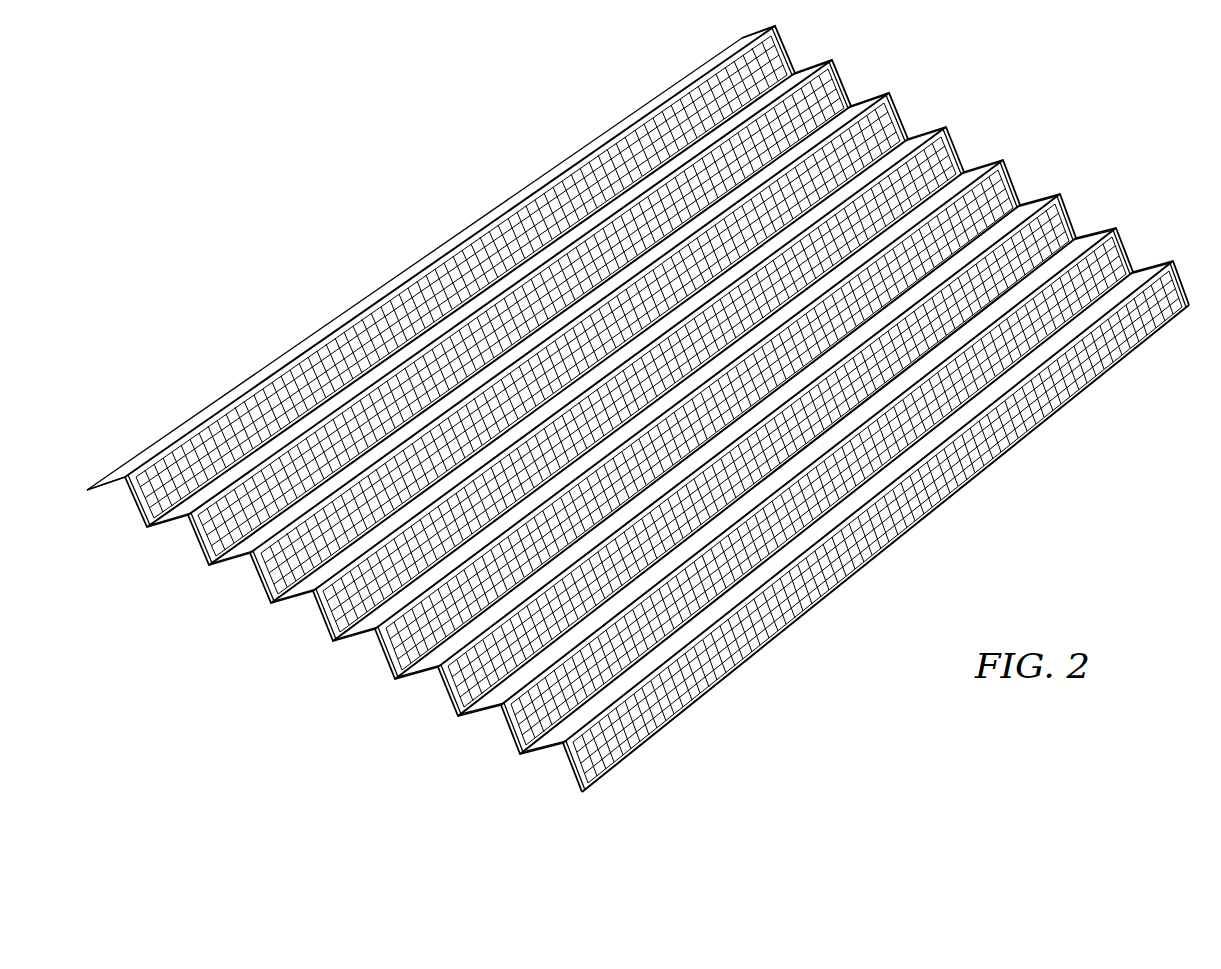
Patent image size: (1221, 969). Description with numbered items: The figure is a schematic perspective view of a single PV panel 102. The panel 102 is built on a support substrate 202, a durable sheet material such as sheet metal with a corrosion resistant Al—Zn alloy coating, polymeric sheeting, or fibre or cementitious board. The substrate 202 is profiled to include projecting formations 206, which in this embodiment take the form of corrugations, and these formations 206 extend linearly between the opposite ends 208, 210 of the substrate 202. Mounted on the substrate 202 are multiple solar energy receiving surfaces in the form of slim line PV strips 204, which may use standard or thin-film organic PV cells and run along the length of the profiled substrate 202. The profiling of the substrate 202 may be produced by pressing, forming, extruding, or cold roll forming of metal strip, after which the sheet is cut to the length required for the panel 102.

The PV panel 102 is at (320, 182).
The support substrate 202 is at (362, 664).
The slim line PV strips 204 is at (268, 402).
The projecting formations 206 is at (136, 484).
The end of the substrate 208 is at (243, 622).
The end of the substrate 210 is at (973, 110).